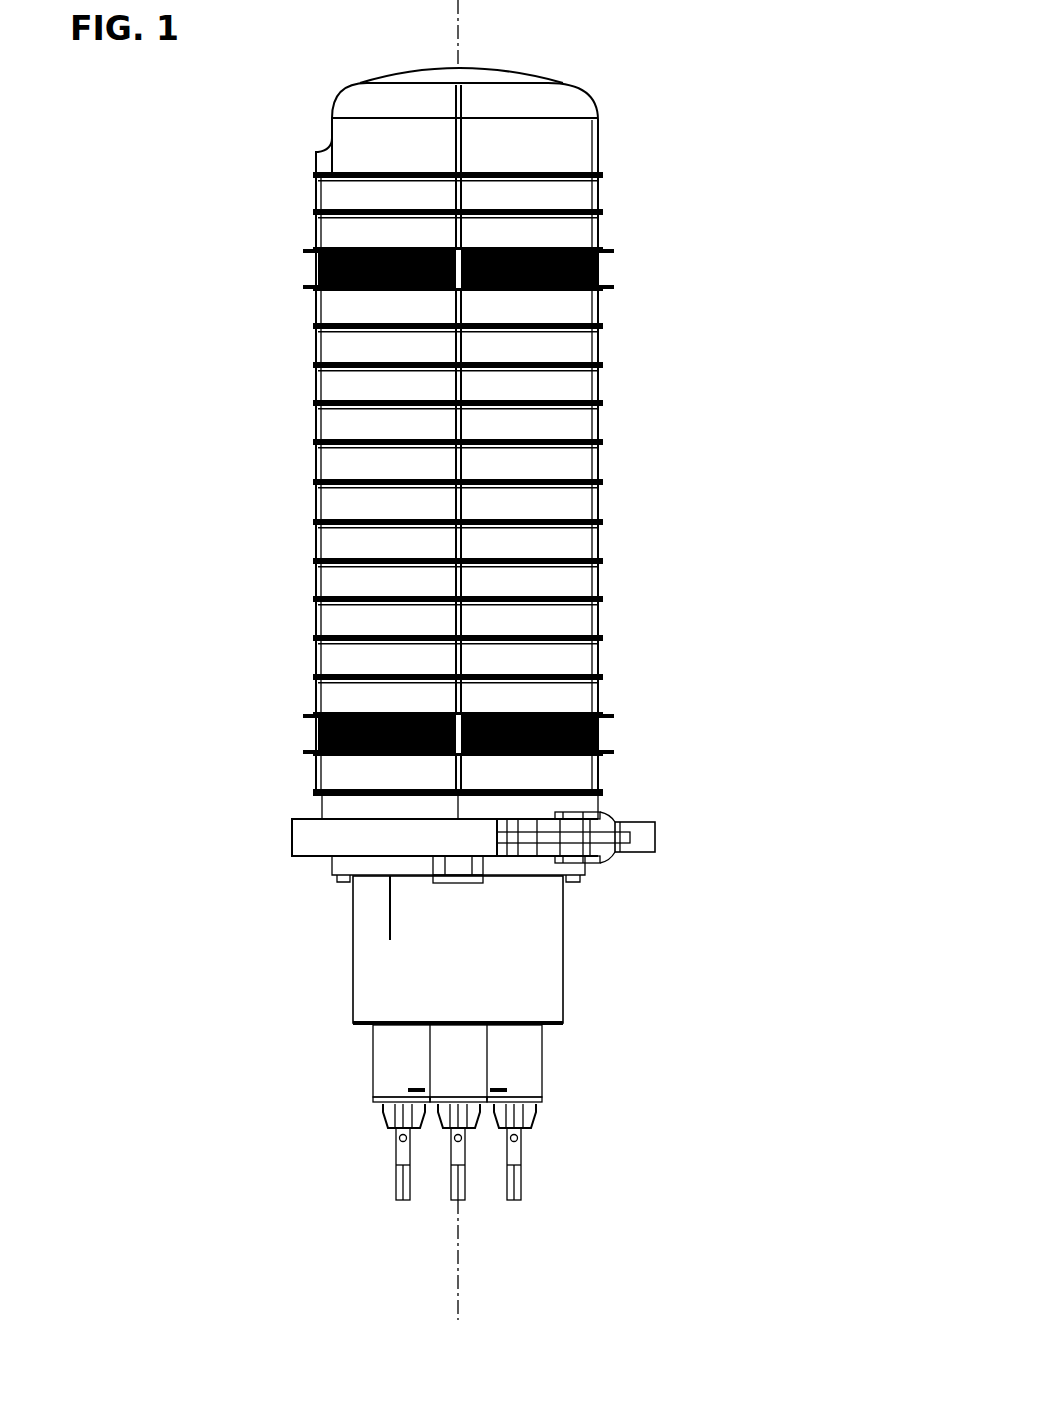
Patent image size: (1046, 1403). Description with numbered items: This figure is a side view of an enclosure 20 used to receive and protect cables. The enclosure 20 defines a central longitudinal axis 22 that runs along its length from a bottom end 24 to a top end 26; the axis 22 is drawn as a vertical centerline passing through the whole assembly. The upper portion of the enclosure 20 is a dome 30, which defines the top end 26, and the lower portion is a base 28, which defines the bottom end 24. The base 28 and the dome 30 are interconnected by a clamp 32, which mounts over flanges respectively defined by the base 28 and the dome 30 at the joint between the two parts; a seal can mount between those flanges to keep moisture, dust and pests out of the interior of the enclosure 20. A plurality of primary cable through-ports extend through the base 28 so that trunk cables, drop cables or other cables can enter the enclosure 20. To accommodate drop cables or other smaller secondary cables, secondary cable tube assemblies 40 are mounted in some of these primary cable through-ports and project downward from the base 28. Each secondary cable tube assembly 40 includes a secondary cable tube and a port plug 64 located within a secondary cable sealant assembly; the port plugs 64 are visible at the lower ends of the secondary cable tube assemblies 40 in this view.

The enclosure 20 is at (673, 73).
The central longitudinal axis 22 is at (455, 3).
The bottom end 24 is at (556, 1025).
The top end 26 is at (492, 68).
The base 28 is at (565, 948).
The dome 30 is at (605, 188).
The clamp 32 is at (655, 832).
The secondary cable tube assembly 40 is at (372, 1063).
The port plug 64 is at (388, 1123).